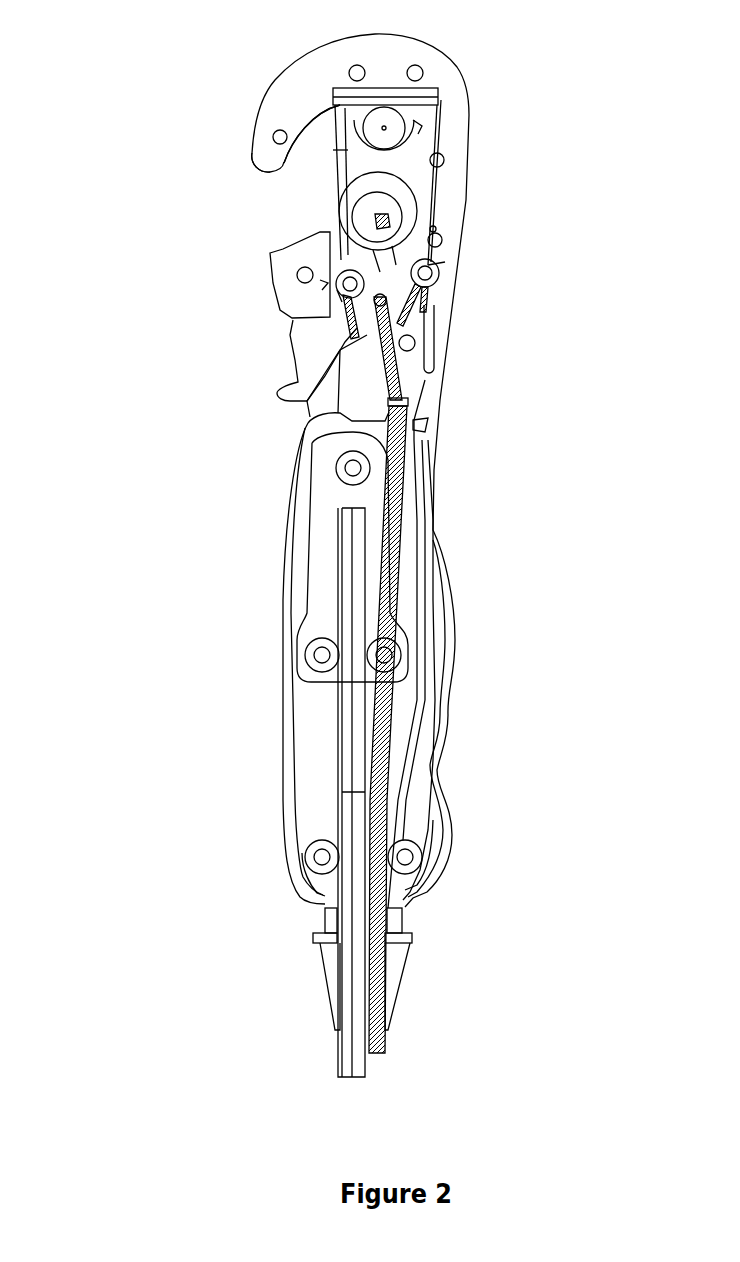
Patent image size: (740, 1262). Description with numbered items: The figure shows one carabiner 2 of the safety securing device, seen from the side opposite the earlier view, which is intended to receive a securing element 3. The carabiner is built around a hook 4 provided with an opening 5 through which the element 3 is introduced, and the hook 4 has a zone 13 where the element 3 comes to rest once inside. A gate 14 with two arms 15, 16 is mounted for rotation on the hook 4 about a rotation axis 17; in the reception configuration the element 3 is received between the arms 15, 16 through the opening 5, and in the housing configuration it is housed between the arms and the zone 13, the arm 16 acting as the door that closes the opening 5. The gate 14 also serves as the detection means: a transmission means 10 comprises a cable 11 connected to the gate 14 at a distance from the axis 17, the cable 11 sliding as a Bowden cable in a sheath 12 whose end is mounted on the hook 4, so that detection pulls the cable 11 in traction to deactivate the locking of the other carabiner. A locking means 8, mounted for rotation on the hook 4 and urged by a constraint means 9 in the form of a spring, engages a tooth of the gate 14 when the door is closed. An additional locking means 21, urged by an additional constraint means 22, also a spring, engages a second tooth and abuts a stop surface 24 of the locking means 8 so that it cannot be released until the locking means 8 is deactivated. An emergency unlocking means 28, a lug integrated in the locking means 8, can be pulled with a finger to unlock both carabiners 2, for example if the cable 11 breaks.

The carabiner 2 is at (300, 31).
The securing element 3 is at (336, 107).
The hook 4 is at (320, 67).
The opening 5 is at (245, 188).
The locking means 8 is at (400, 307).
The constraint means 9 is at (440, 271).
The transmission means 10 is at (407, 485).
The cable 11 is at (416, 345).
The sheath 12 is at (400, 432).
The receiving zone 13 is at (407, 99).
The gate 14 is at (420, 152).
The arm 15 is at (418, 131).
The arm 16 is at (340, 151).
The rotation axis 17 is at (392, 220).
The additional locking means 21 is at (310, 355).
The additional constraint means 22 is at (338, 276).
The stop surface 24 is at (336, 313).
The emergency unlocking means 28 is at (432, 341).